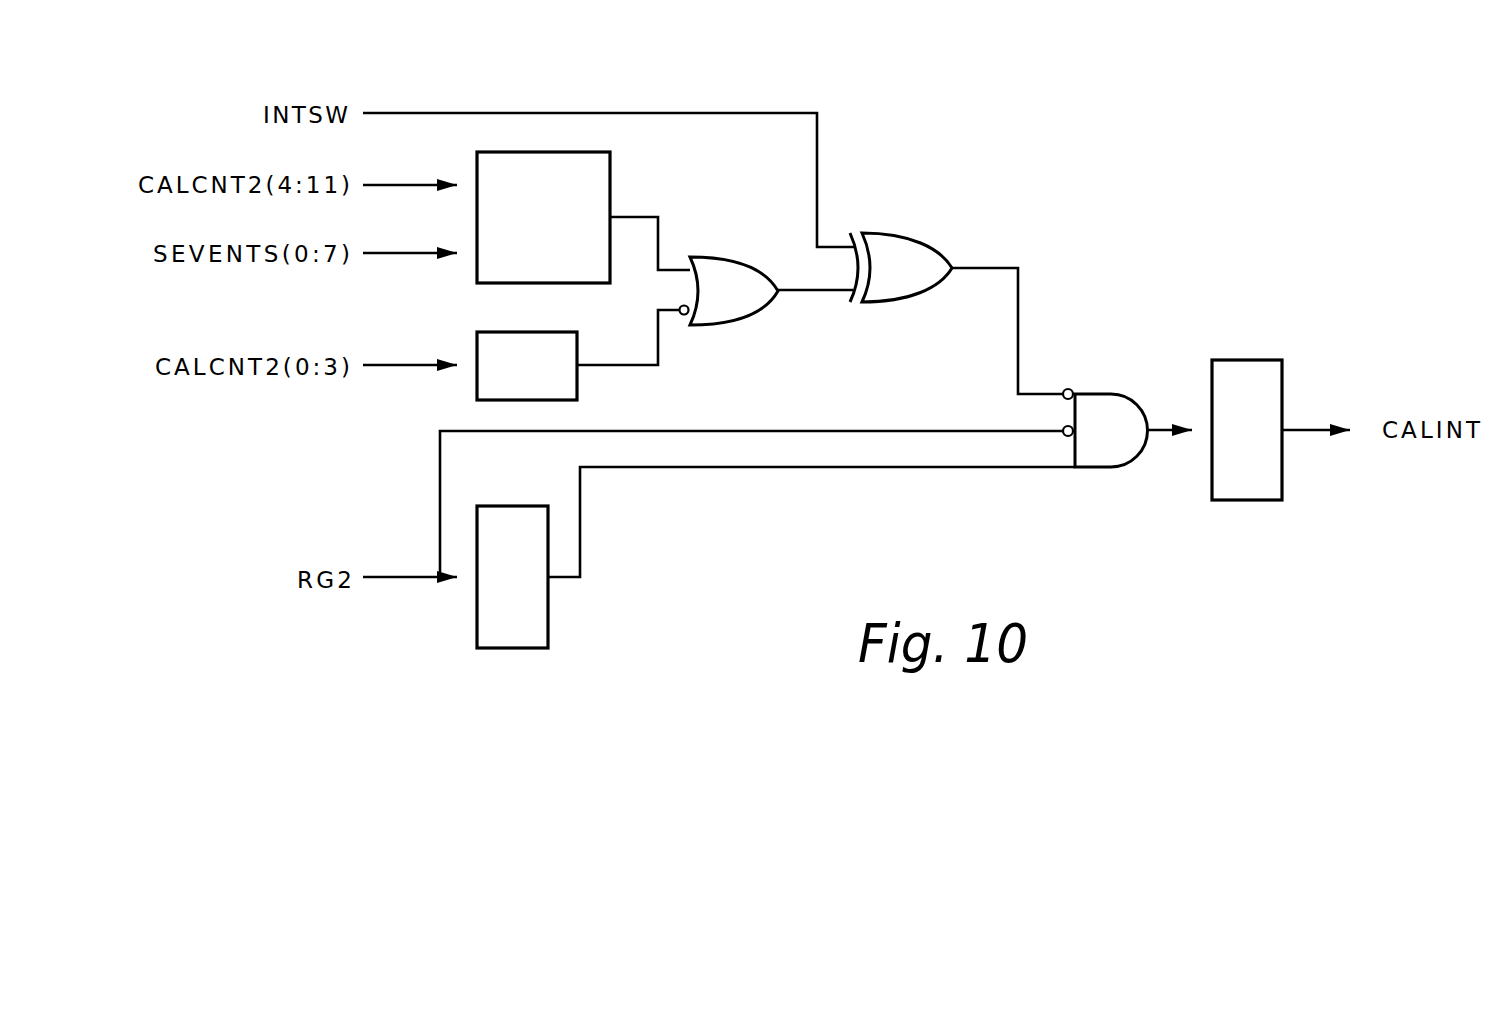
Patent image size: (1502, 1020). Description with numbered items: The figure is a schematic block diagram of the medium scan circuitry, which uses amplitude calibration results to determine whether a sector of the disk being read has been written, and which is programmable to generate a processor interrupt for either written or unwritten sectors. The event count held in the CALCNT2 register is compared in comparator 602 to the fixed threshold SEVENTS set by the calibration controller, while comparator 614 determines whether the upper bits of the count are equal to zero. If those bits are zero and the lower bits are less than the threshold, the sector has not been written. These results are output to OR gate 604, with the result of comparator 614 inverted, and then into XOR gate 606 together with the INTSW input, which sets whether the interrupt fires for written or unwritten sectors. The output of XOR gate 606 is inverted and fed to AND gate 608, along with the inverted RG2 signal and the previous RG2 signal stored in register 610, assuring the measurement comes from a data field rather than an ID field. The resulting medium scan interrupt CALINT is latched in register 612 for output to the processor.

The comparator 602 is at (613, 176).
The OR gate 604 is at (762, 321).
The XOR gate 606 is at (930, 296).
The AND gate 608 is at (1098, 468).
The register 610 is at (512, 649).
The register 612 is at (1250, 501).
The comparator 614 is at (578, 379).